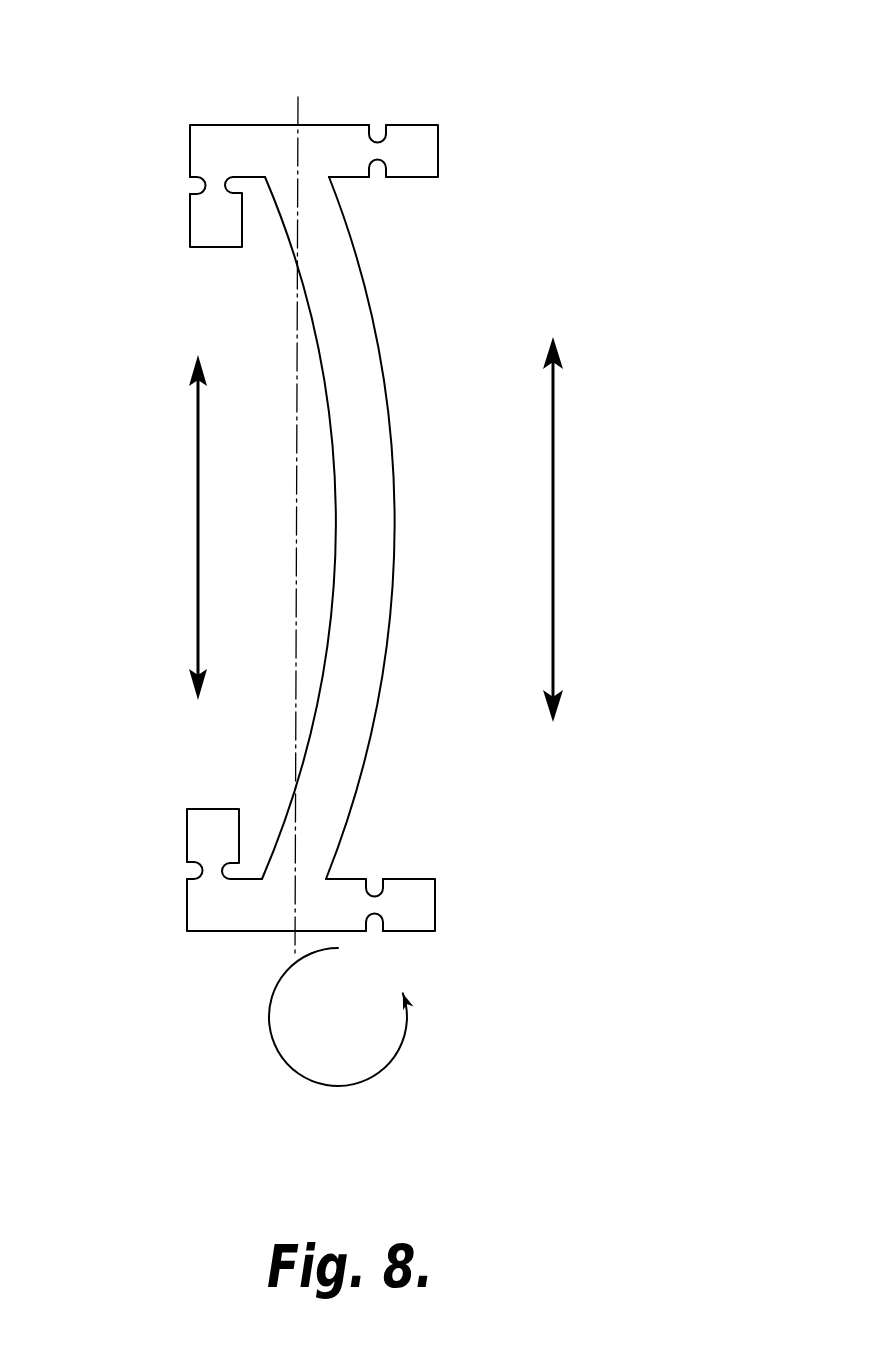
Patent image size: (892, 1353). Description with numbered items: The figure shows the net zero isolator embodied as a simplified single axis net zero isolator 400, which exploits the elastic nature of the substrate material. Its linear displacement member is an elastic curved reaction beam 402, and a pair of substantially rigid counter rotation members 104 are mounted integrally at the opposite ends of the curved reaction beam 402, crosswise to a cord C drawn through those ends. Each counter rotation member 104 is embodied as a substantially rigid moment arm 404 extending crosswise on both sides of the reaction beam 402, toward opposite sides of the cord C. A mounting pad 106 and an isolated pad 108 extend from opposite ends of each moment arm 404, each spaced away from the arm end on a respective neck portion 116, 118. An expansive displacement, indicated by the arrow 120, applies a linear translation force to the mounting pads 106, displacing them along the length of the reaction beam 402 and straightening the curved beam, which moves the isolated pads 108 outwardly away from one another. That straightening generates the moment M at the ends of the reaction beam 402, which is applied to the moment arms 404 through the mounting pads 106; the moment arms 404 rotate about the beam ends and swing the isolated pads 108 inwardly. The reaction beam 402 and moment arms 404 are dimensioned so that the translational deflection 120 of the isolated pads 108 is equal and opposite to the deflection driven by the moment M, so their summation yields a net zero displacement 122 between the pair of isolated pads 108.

The single axis net zero isolator 400 is at (404, 538).
The counter rotation member 104 is at (302, 538).
The moment arm 404 is at (222, 125).
The elastic curved reaction beam 402 is at (415, 460).
The mounting pad 106 is at (219, 247).
The isolated pad 108 is at (438, 160).
The neck portion 116 is at (180, 185).
The neck portion 118 is at (384, 115).
The expansive displacement 120 is at (198, 523).
The net zero displacement 122 is at (553, 483).
The cord C is at (297, 572).
The moment M is at (341, 1017).